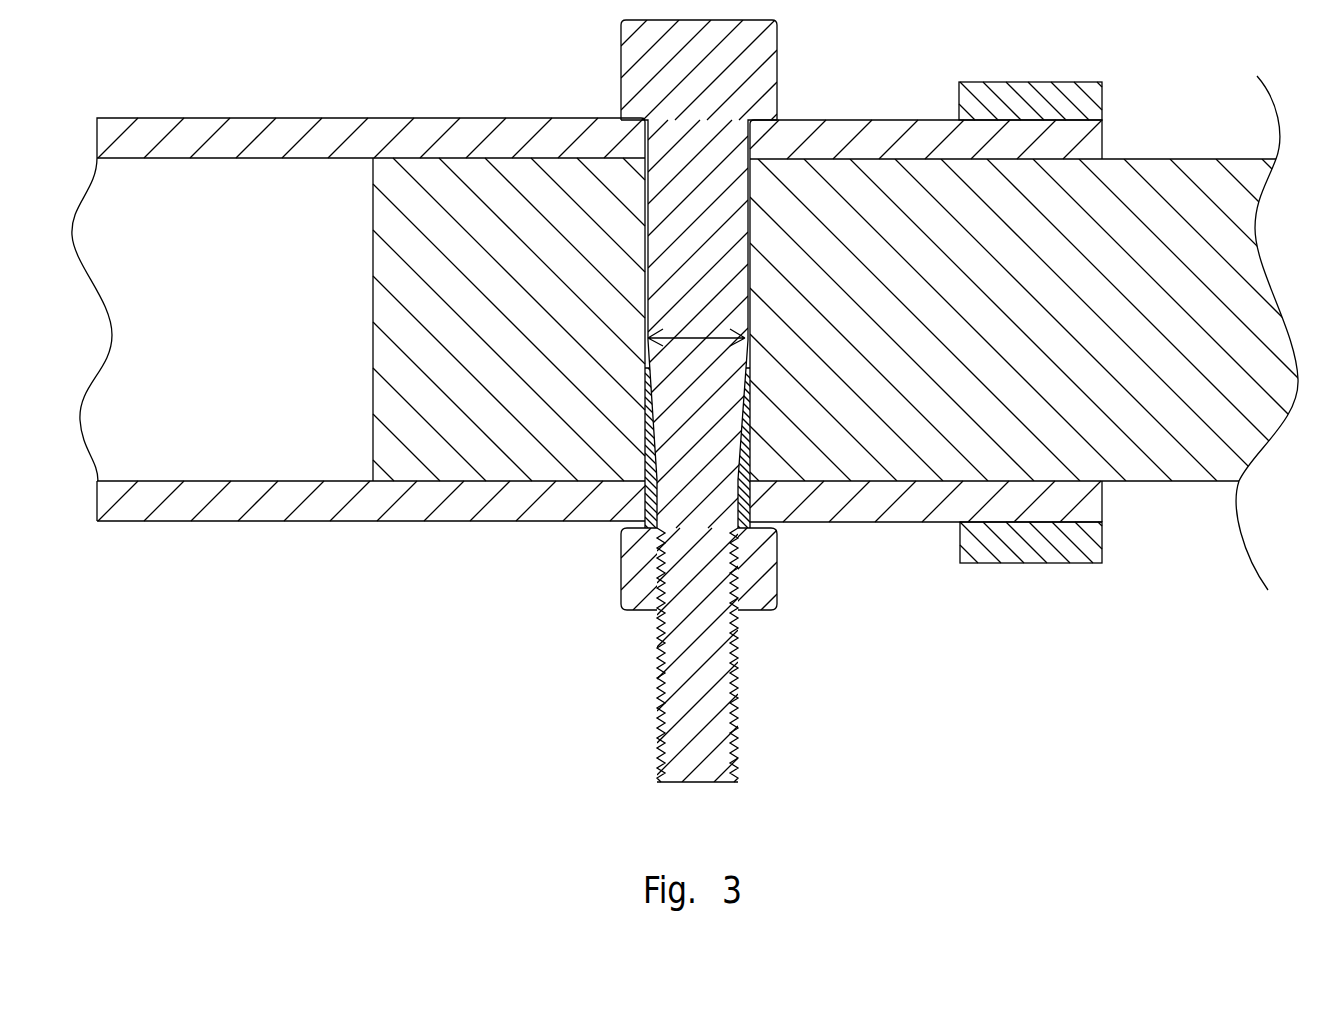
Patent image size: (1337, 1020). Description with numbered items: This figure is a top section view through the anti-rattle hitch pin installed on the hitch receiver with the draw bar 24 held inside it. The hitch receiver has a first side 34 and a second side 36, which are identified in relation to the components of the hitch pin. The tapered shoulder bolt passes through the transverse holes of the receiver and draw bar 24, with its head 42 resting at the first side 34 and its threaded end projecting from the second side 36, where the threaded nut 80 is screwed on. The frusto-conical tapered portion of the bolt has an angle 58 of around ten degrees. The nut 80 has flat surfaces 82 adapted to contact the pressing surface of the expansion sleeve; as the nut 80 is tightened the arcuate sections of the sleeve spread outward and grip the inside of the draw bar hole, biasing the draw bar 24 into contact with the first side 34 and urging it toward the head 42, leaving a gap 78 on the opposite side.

The draw bar 24 is at (1157, 175).
The first side 34 is at (510, 105).
The second side 36 is at (812, 560).
The head 42 is at (632, 60).
The angle 58 is at (707, 338).
The gap 78 is at (360, 473).
The threaded nut 80 is at (620, 590).
The flat surfaces 82 is at (641, 524).